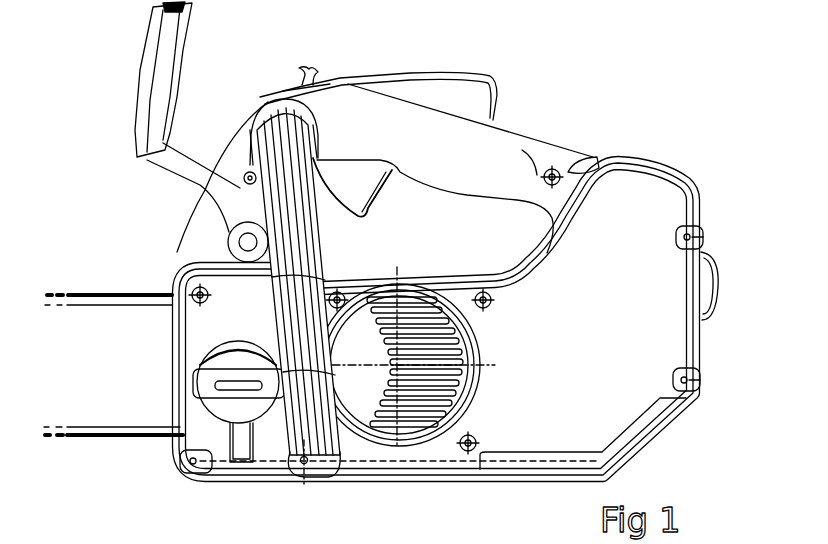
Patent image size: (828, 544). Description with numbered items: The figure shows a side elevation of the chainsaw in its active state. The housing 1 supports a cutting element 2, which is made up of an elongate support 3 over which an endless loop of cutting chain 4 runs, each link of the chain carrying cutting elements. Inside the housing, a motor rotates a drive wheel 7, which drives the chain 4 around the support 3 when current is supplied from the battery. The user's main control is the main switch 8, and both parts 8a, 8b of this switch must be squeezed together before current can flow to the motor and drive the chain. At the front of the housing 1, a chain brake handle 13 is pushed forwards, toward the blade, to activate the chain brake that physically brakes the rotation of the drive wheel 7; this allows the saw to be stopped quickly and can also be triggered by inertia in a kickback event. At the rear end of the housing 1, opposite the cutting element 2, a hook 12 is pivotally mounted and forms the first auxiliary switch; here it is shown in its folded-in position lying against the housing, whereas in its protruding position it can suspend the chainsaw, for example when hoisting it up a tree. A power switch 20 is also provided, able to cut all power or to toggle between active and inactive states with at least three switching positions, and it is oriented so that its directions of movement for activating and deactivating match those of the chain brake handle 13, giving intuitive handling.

The housing 1 is at (640, 160).
The cutting element 2 is at (116, 279).
The elongate support 3 is at (116, 429).
The cutting chain 4 is at (70, 438).
The drive wheel 7 is at (388, 410).
The main switch 8 is at (465, 49).
The first part of main switch 8a is at (417, 117).
The second part of main switch 8b is at (366, 190).
The hook 12 is at (714, 312).
The chain brake handle 13 is at (188, 15).
The power switch 20 is at (313, 64).